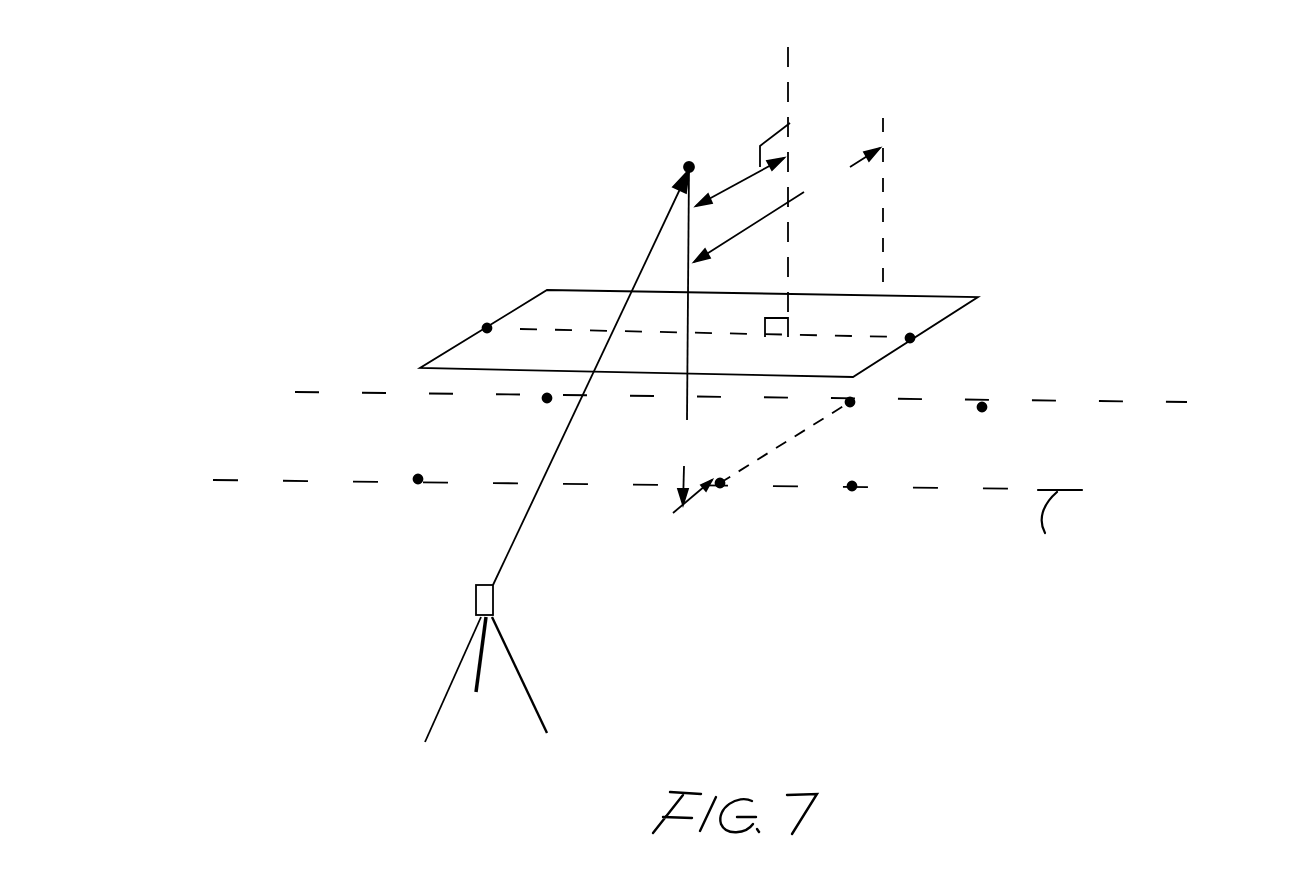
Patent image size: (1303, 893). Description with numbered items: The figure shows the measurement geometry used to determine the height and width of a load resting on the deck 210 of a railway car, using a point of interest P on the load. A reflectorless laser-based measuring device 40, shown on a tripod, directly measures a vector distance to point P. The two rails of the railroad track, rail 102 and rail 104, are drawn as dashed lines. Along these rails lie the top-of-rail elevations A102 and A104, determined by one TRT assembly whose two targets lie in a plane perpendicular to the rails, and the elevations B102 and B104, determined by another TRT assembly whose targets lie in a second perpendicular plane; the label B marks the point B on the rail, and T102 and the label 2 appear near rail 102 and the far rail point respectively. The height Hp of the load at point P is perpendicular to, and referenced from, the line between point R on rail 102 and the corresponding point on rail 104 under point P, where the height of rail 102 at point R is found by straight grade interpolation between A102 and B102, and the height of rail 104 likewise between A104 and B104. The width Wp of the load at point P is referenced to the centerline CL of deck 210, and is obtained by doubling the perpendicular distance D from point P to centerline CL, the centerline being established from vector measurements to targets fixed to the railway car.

The deck 210 is at (937, 292).
The rail 104 is at (1166, 396).
The rail 102 is at (624, 484).
The laser-based measuring device 40 is at (495, 602).
The point 2 is at (856, 416).
The point of interest P is at (686, 162).
The perpendicular distance D is at (736, 180).
The width of the load Wp is at (787, 205).
The height of the load Hp is at (685, 336).
The centerline of the deck CL is at (563, 330).
The top-of-rail elevation B104 is at (543, 398).
The point B is at (547, 403).
The top-of-rail elevation B102 is at (416, 485).
The point on rail 102 R is at (761, 465).
The top-of-rail elevation A104 is at (982, 407).
The top-of-rail elevation A102 is at (852, 487).
The line T 102 T102 is at (1137, 538).